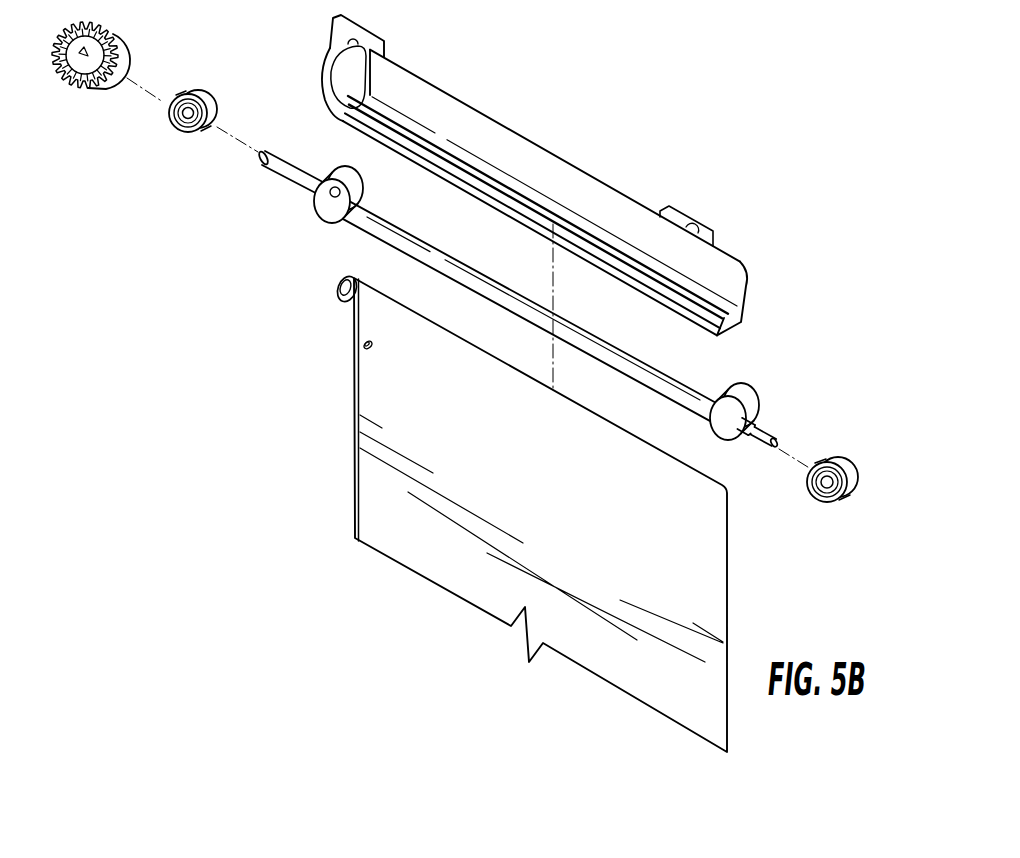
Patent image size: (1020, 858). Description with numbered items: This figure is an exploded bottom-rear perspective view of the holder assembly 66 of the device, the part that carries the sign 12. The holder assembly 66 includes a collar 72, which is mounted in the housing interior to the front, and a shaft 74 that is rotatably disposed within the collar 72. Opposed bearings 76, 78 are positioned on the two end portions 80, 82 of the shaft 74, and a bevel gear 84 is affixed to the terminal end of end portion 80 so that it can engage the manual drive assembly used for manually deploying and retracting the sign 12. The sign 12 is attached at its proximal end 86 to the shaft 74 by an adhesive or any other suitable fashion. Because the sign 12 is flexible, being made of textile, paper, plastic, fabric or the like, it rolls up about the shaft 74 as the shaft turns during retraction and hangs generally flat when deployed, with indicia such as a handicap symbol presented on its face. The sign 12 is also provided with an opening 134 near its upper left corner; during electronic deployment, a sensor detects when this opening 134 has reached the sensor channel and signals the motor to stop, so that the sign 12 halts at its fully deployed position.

The sign 12 is at (358, 475).
The holder assembly 66 is at (758, 172).
The collar 72 is at (490, 132).
The shaft 74 is at (683, 383).
The bearing 76 is at (205, 93).
The bearing 78 is at (850, 462).
The end portion 80 is at (290, 179).
The end portion 82 is at (776, 445).
The bevel gear 84 is at (82, 95).
The proximal end 86 is at (343, 280).
The opening 134 is at (363, 348).